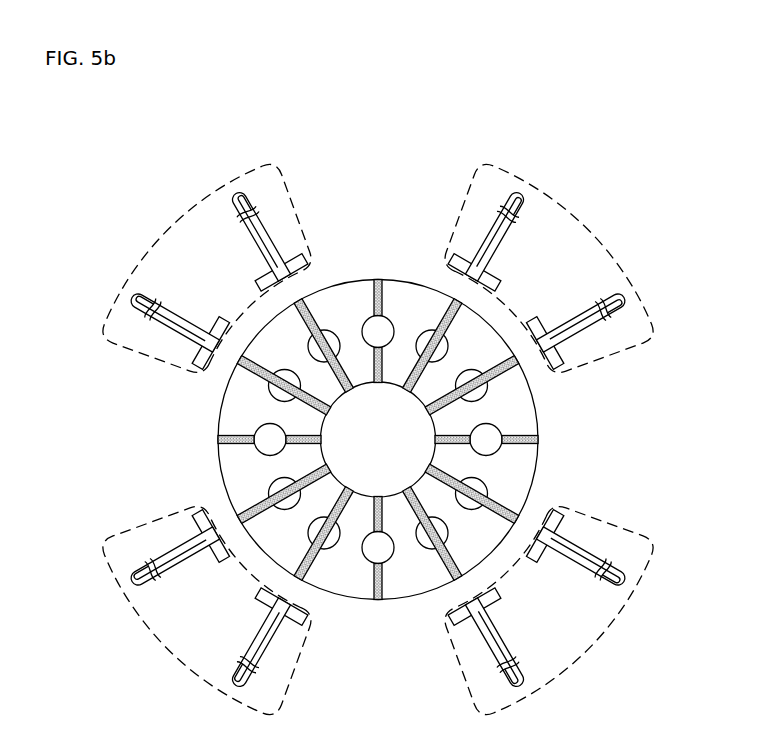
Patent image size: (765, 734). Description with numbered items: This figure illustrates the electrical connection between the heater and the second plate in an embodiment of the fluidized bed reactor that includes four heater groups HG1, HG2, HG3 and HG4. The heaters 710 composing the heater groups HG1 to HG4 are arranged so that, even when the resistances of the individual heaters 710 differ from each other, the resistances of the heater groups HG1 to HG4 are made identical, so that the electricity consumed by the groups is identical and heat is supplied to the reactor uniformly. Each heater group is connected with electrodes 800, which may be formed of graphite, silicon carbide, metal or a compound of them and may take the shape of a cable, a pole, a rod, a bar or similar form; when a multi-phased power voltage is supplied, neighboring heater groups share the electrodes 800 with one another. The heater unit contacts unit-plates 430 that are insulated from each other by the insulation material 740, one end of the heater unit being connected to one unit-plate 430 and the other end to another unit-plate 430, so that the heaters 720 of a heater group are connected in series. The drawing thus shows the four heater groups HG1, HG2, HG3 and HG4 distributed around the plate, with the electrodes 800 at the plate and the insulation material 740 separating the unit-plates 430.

The heater 710 is at (235, 193).
The unit-plate 430 is at (272, 343).
The heater 720 is at (318, 302).
The insulation material 740 is at (218, 440).
The electrode 800 is at (262, 448).
The heater group HG1 is at (181, 215).
The heater group HG2 is at (157, 644).
The heater group HG3 is at (598, 644).
The heater group HG4 is at (600, 240).